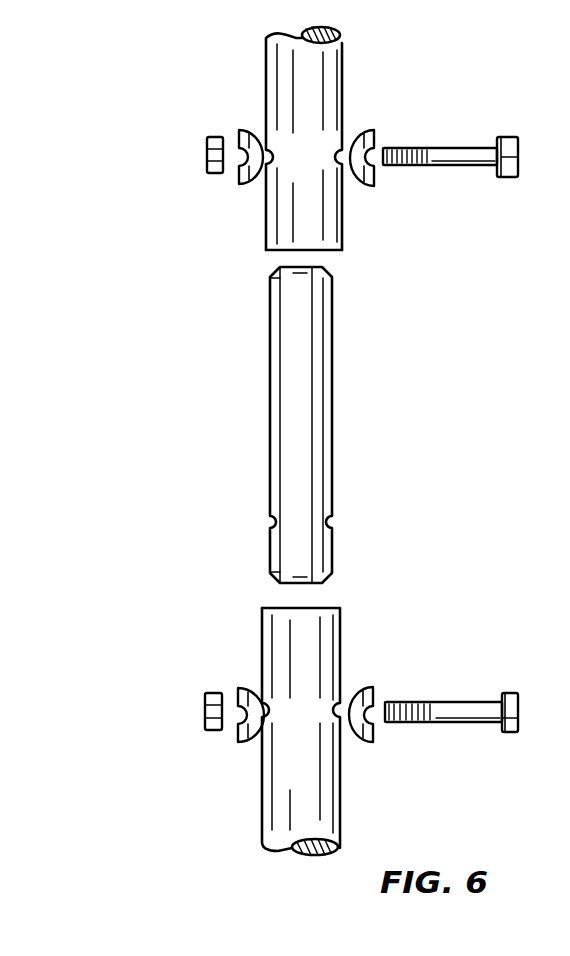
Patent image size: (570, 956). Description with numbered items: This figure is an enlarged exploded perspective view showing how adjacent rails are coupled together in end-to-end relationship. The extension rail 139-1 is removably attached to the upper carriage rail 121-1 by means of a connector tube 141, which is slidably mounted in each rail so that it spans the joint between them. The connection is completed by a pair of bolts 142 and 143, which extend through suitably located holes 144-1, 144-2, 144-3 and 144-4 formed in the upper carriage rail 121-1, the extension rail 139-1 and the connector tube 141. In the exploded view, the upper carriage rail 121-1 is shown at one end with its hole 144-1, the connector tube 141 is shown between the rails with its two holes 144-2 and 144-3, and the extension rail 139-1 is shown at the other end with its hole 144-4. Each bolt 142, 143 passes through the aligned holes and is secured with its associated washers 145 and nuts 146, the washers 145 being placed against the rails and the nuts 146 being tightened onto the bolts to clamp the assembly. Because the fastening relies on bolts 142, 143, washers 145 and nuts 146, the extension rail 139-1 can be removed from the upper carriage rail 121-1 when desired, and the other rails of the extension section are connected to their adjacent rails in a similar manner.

The upper carriage rail 121-1 is at (322, 61).
The extension rail 139-1 is at (332, 805).
The connector tube 141 is at (320, 398).
The bolt 142 is at (453, 148).
The bolt 143 is at (467, 703).
The hole 144-1 is at (345, 150).
The hole 144-2 is at (330, 330).
The hole 144-3 is at (330, 522).
The hole 144-4 is at (262, 717).
The washer 145 is at (242, 182).
The nut 146 is at (207, 137).